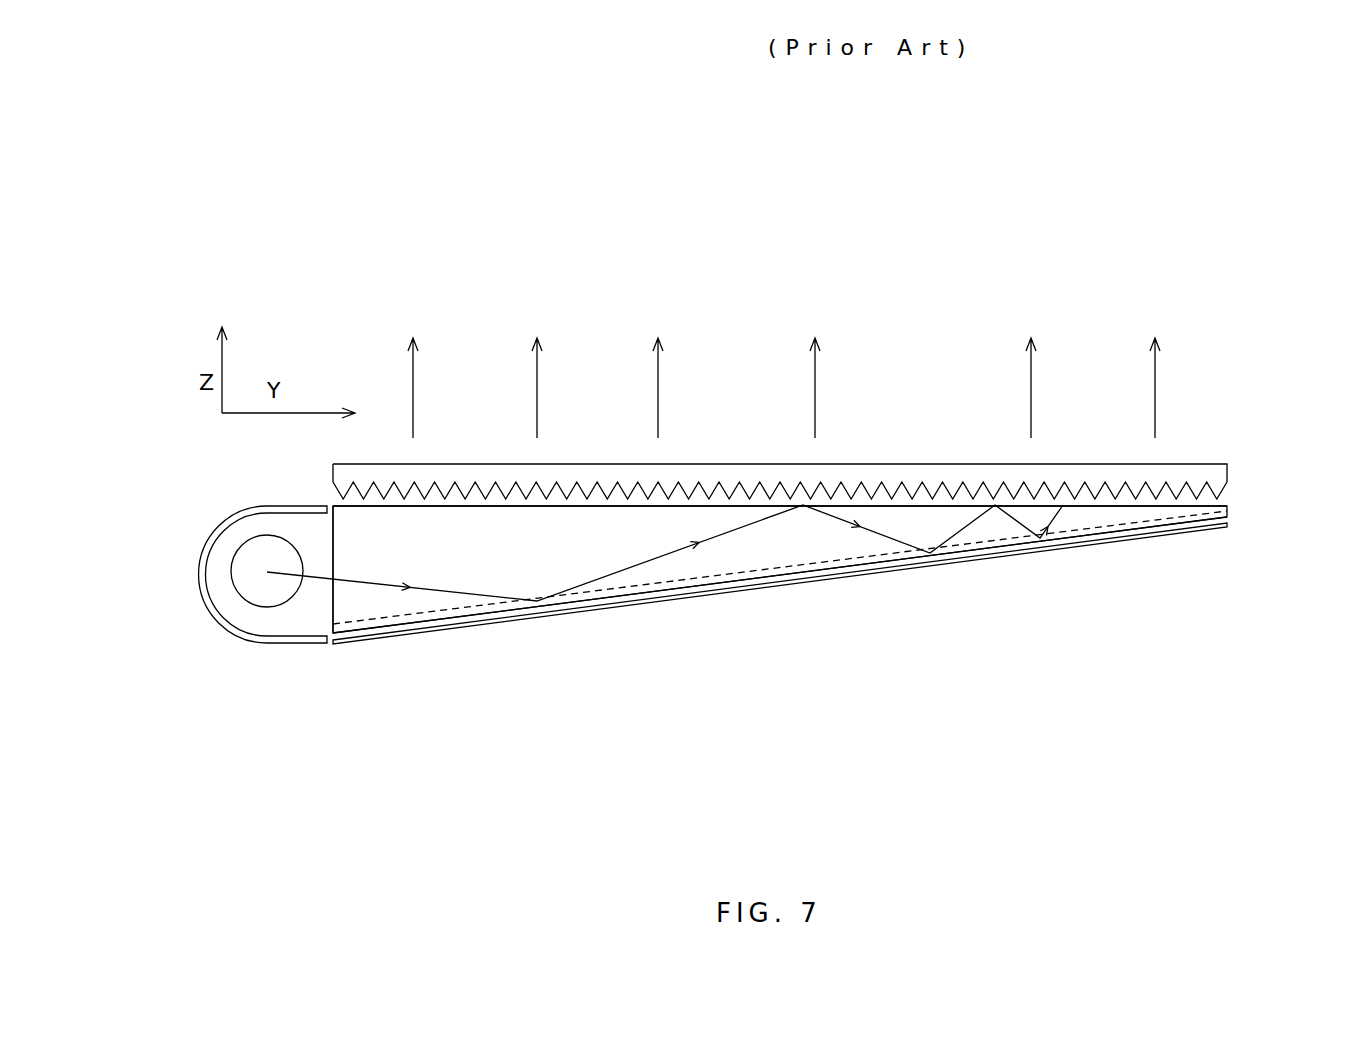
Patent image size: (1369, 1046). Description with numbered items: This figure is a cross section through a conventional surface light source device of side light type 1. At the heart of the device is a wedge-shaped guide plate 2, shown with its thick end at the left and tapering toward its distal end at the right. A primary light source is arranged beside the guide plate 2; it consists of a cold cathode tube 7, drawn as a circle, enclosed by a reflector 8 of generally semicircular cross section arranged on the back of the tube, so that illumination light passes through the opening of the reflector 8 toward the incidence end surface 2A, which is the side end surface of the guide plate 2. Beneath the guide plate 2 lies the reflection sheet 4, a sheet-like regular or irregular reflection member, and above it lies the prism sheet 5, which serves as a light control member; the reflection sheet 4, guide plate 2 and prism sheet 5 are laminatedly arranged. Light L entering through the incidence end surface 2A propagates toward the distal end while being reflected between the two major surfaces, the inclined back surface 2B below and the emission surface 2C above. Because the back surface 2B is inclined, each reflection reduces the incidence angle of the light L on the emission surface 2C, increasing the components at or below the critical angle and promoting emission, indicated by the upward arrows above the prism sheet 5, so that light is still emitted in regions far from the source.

The surface light source device of side light type 1 is at (915, 284).
The guide plate 2 is at (780, 508).
The incidence end surface 2A is at (334, 568).
The back surface 2B is at (612, 598).
The emission surface 2C is at (712, 505).
The reflection sheet 4 is at (900, 567).
The prism sheet 5 is at (1222, 474).
The cold cathode tube 7 is at (277, 600).
The reflector 8 is at (213, 618).
The light L is at (470, 593).